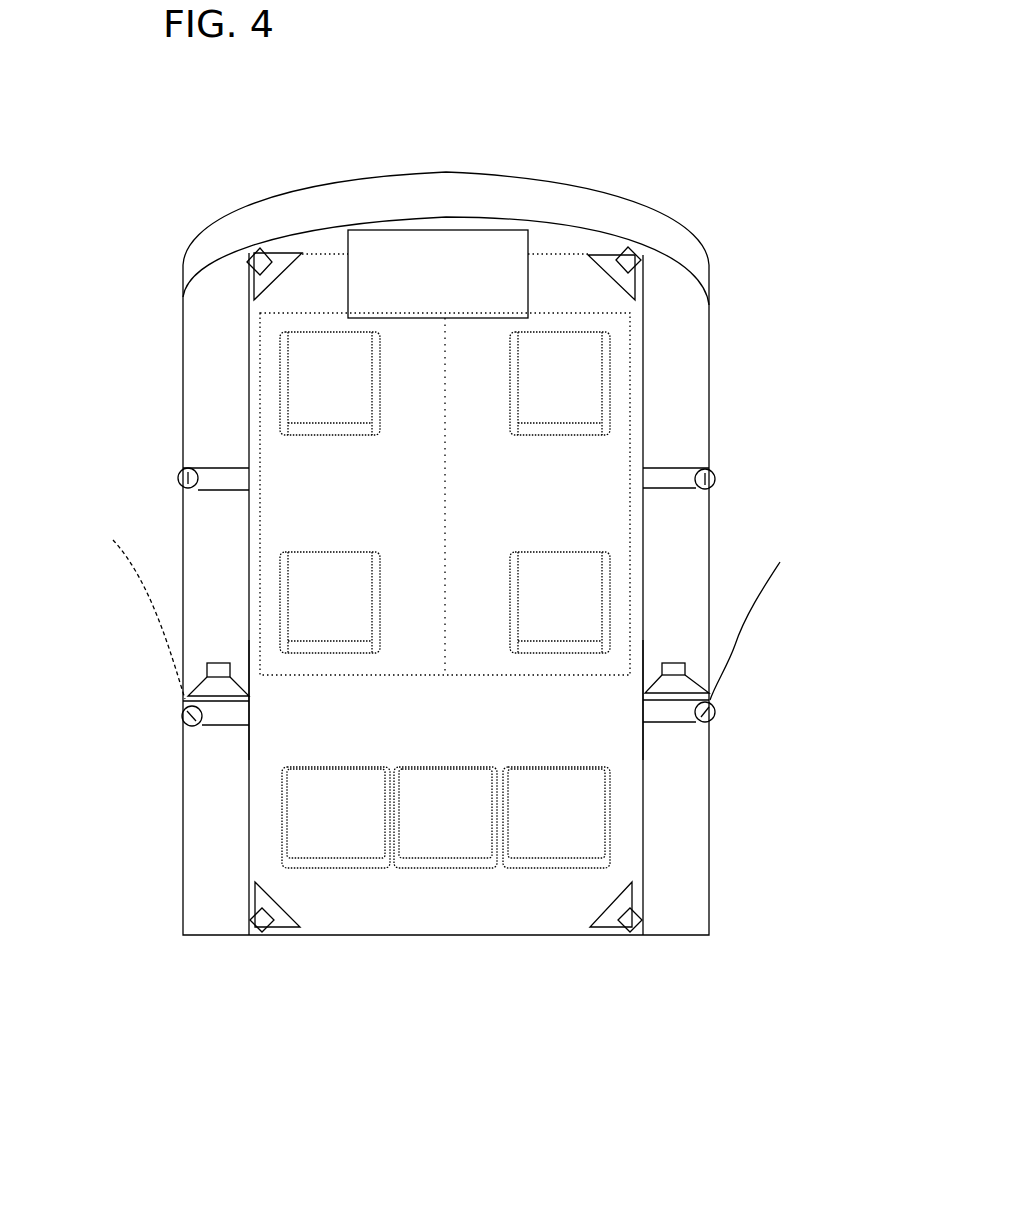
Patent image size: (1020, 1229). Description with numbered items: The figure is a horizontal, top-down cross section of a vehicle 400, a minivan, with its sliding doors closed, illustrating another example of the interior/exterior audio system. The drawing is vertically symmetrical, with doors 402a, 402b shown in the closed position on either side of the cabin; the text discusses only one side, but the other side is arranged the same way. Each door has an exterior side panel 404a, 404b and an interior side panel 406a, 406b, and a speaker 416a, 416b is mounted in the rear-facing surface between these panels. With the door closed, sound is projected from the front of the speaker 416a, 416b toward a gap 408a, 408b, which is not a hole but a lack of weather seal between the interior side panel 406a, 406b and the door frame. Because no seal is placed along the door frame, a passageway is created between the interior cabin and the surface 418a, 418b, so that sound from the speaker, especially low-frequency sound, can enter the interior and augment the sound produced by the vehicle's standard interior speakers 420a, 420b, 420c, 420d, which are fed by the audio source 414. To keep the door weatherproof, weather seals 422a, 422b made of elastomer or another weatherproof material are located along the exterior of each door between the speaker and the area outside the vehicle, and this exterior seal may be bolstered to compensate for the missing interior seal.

The vehicle 400 is at (437, 1010).
The door 402a is at (697, 512).
The door 402b is at (197, 513).
The exterior side panel 404a is at (708, 612).
The exterior side panel 404b is at (183, 645).
The interior side panel 406a is at (680, 724).
The interior side panel 406b is at (263, 649).
The gap 408a is at (635, 650).
The gap 408b is at (210, 730).
The audio source 414 is at (438, 274).
The speaker 416a is at (688, 672).
The speaker 416b is at (213, 688).
The surface 418a is at (712, 706).
The surface 418b is at (186, 703).
The interior speaker 420a is at (620, 268).
The interior speaker 420b is at (272, 268).
The interior speaker 420c is at (292, 935).
The interior speaker 420d is at (620, 912).
The weather seal 422a is at (705, 490).
The weather seal 422b is at (188, 488).